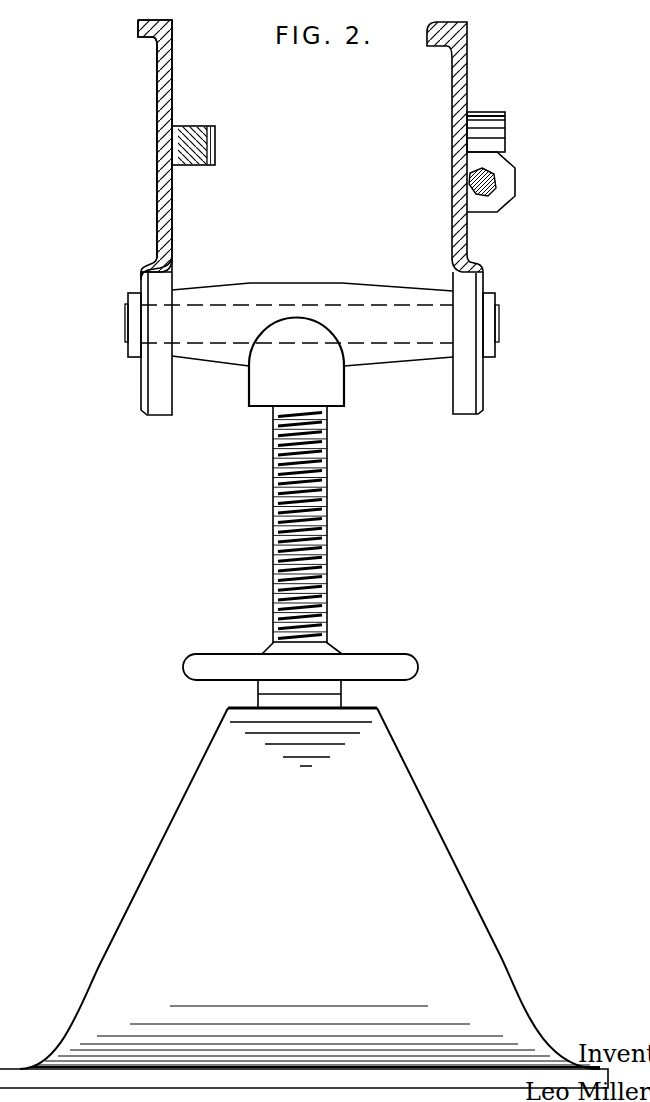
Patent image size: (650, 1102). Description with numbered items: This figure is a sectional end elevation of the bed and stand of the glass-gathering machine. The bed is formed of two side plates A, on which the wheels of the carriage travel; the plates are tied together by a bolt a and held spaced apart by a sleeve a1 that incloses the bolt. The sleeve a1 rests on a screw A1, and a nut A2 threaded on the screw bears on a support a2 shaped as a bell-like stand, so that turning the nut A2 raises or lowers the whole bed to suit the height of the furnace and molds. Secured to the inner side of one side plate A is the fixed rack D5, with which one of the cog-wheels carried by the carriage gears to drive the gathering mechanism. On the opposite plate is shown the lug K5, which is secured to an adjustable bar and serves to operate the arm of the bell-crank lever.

The side plate A is at (161, 63).
The fixed rack D5 is at (215, 136).
The lug K5 is at (507, 130).
The bolt a is at (502, 327).
The sleeve a1 is at (372, 360).
The screw A1 is at (320, 498).
The nut A2 is at (398, 670).
The support a2 is at (417, 802).